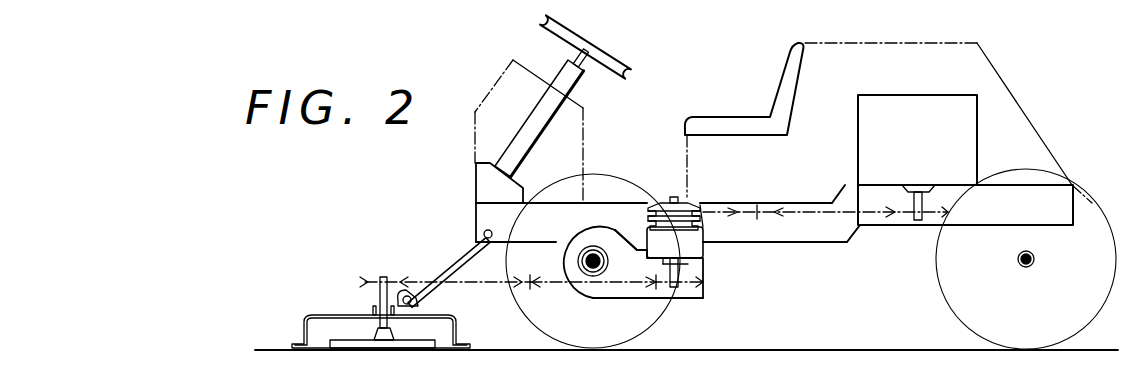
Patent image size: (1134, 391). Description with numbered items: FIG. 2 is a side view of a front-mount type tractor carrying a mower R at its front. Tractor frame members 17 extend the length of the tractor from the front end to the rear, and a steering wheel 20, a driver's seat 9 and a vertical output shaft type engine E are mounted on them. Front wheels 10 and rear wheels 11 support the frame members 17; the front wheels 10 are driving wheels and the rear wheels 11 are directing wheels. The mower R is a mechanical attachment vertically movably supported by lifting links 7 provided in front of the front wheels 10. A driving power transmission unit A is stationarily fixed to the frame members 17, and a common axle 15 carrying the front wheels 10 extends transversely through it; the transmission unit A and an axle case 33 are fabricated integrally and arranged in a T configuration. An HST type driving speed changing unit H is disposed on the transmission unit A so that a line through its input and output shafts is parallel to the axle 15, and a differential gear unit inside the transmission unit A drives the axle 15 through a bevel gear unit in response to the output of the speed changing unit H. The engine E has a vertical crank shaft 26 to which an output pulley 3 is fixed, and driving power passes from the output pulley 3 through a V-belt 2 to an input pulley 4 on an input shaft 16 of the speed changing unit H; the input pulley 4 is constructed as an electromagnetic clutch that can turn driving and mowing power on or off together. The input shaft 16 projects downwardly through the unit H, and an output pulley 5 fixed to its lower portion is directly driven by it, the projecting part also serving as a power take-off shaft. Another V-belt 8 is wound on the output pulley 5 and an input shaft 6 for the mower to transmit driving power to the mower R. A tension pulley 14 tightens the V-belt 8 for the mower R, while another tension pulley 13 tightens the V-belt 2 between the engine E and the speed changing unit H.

The V-belt 2 is at (825, 216).
The output pulley 3 is at (893, 212).
The input pulley 4 is at (700, 205).
The output pulley 5 is at (688, 298).
The input shaft 6 is at (370, 277).
The lifting links 7 is at (450, 262).
The V-belt 8 is at (490, 284).
The driver's seat 9 is at (797, 43).
The front wheels 10 is at (622, 175).
The rear wheels 11 is at (1000, 172).
The tension pulley 13 is at (757, 205).
The tension pulley 14 is at (532, 285).
The axle 15 is at (598, 244).
The input shaft 16 is at (672, 196).
The tractor frame members 17 is at (853, 238).
The steering wheel 20 is at (631, 73).
The crank shaft 26 is at (917, 222).
The axle case 33 is at (578, 252).
The driving power transmission unit A is at (612, 298).
The engine E is at (898, 95).
The driving speed changing unit H is at (703, 250).
The mower R is at (325, 315).